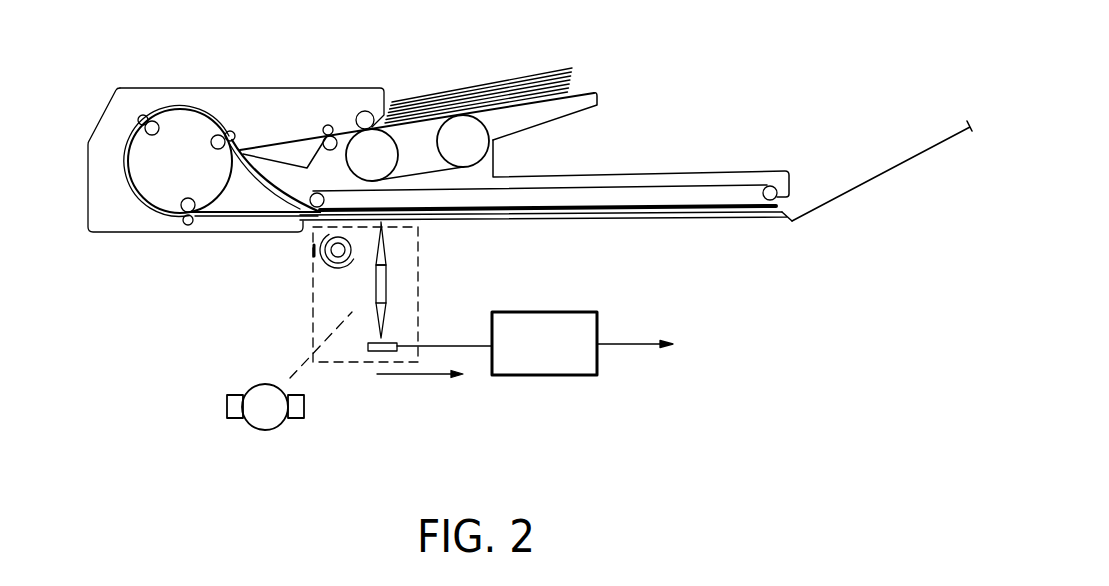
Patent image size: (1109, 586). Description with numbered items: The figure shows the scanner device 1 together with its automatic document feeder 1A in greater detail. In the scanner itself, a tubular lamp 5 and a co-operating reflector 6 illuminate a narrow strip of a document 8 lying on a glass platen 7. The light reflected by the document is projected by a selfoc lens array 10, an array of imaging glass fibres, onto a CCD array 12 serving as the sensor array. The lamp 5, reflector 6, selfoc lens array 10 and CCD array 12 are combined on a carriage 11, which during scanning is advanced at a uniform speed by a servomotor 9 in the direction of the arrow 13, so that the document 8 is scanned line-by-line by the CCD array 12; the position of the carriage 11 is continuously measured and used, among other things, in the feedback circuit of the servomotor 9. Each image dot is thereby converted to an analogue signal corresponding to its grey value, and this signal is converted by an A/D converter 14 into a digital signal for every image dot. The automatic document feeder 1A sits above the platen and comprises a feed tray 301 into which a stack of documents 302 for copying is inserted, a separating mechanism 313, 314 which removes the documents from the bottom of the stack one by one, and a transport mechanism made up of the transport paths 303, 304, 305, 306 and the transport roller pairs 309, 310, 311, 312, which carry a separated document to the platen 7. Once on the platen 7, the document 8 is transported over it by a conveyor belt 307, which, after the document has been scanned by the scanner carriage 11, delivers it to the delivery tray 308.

The scanner device 1 is at (492, 250).
The automatic document feeder 1A is at (231, 224).
The tubular lamp 5 is at (314, 256).
The reflector 6 is at (315, 270).
The glass platen 7 is at (546, 234).
The document 8 is at (541, 240).
The servomotor 9 is at (274, 417).
The selfoc lens array 10 is at (422, 280).
The carriage 11 is at (378, 302).
The CCD array 12 is at (414, 379).
The arrow 13 is at (420, 394).
The A/D converter 14 is at (582, 325).
The feed tray 301 is at (565, 88).
The stack of documents 302 is at (478, 81).
The transport path 303 is at (417, 104).
The transport path 304 is at (180, 126).
The transport path 305 is at (164, 190).
The transport path 306 is at (255, 208).
The conveyor belt 307 is at (543, 170).
The delivery tray 308 is at (882, 171).
The transport roller pair 309 is at (331, 95).
The transport roller pair 310 is at (219, 94).
The transport roller pair 311 is at (124, 87).
The transport roller pair 312 is at (181, 237).
The separating mechanism 313 is at (456, 148).
The separating mechanism 314 is at (378, 84).